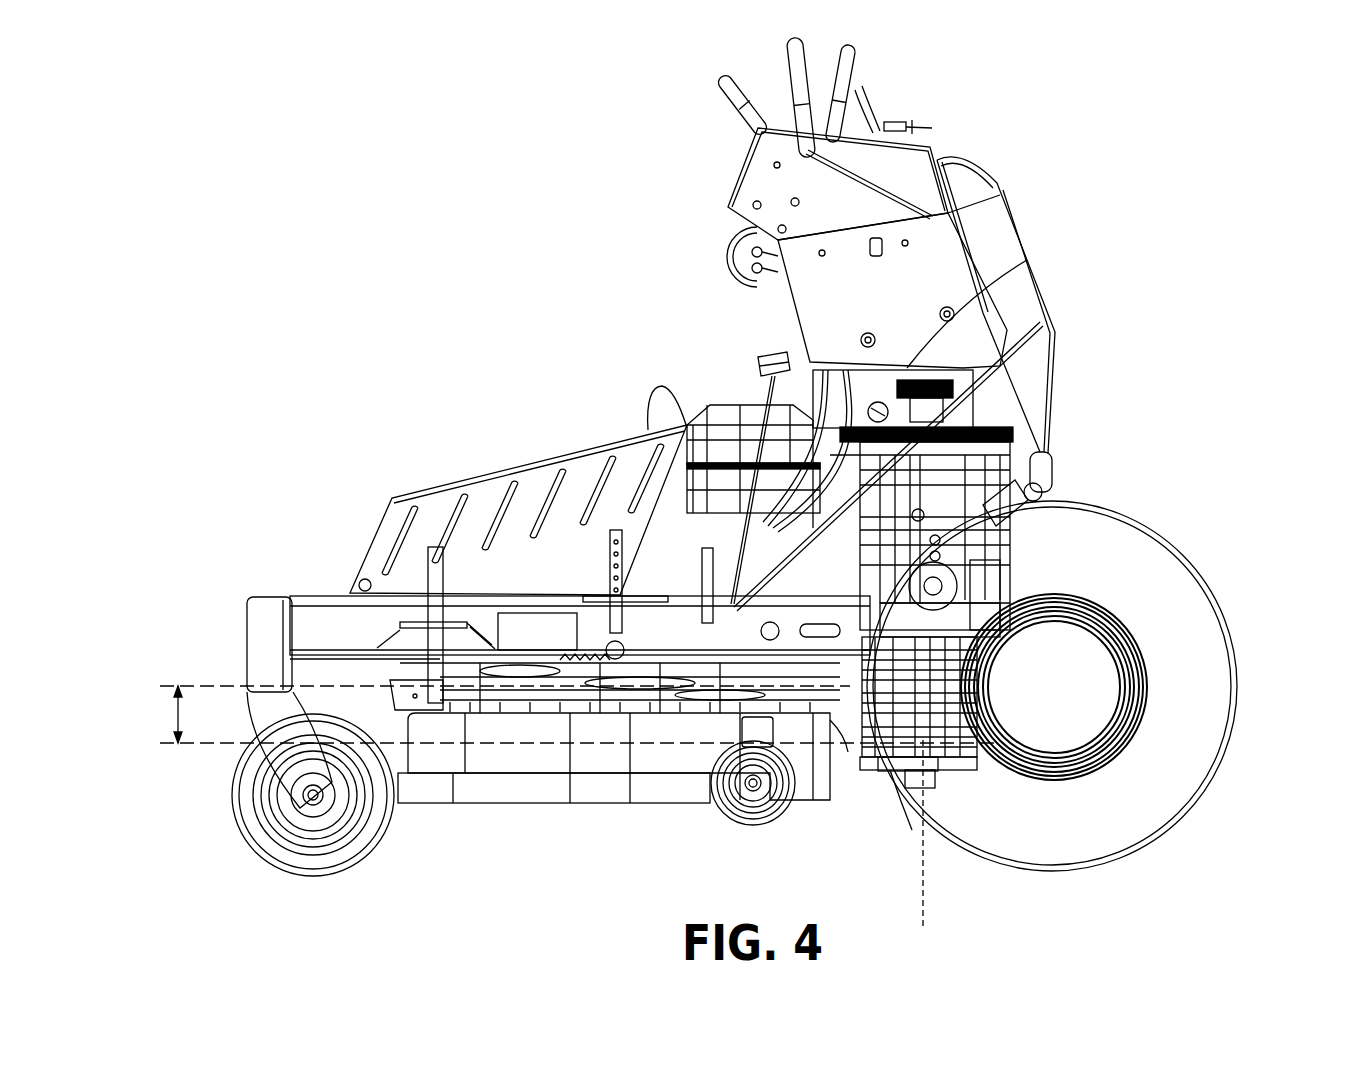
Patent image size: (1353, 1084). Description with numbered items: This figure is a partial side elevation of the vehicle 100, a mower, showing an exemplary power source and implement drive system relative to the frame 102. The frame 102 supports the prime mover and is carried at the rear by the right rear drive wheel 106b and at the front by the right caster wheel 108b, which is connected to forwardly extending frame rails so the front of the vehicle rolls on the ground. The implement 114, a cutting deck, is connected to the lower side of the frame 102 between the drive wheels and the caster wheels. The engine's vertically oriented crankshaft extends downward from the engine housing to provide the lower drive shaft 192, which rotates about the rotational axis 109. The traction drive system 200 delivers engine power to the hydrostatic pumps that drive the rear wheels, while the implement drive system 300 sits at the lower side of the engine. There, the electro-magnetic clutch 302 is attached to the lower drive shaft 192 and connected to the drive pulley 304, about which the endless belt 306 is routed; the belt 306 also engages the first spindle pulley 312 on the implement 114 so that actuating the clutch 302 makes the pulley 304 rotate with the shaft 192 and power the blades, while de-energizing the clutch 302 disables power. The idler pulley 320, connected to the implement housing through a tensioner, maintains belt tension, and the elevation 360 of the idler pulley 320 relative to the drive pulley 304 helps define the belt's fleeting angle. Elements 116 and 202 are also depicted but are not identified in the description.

The vehicle 100 is at (1028, 128).
The frame 102 is at (320, 596).
The rear drive wheel 106b is at (1200, 865).
The caster wheel 108b is at (375, 850).
The rotational axis 109 is at (925, 893).
The implement 114 is at (427, 790).
The engine 116 is at (990, 680).
The lower drive shaft 192 is at (940, 758).
The traction drive system 200 is at (716, 317).
The console cover 202 is at (1030, 264).
The implement drive system 300 is at (938, 790).
The electro-magnetic clutch 302 is at (903, 787).
The drive pulley 304 is at (850, 755).
The endless belt 306 is at (793, 807).
The first spindle pulley 312 is at (562, 710).
The idler pulley 320 is at (620, 756).
The elevation 360 is at (177, 700).